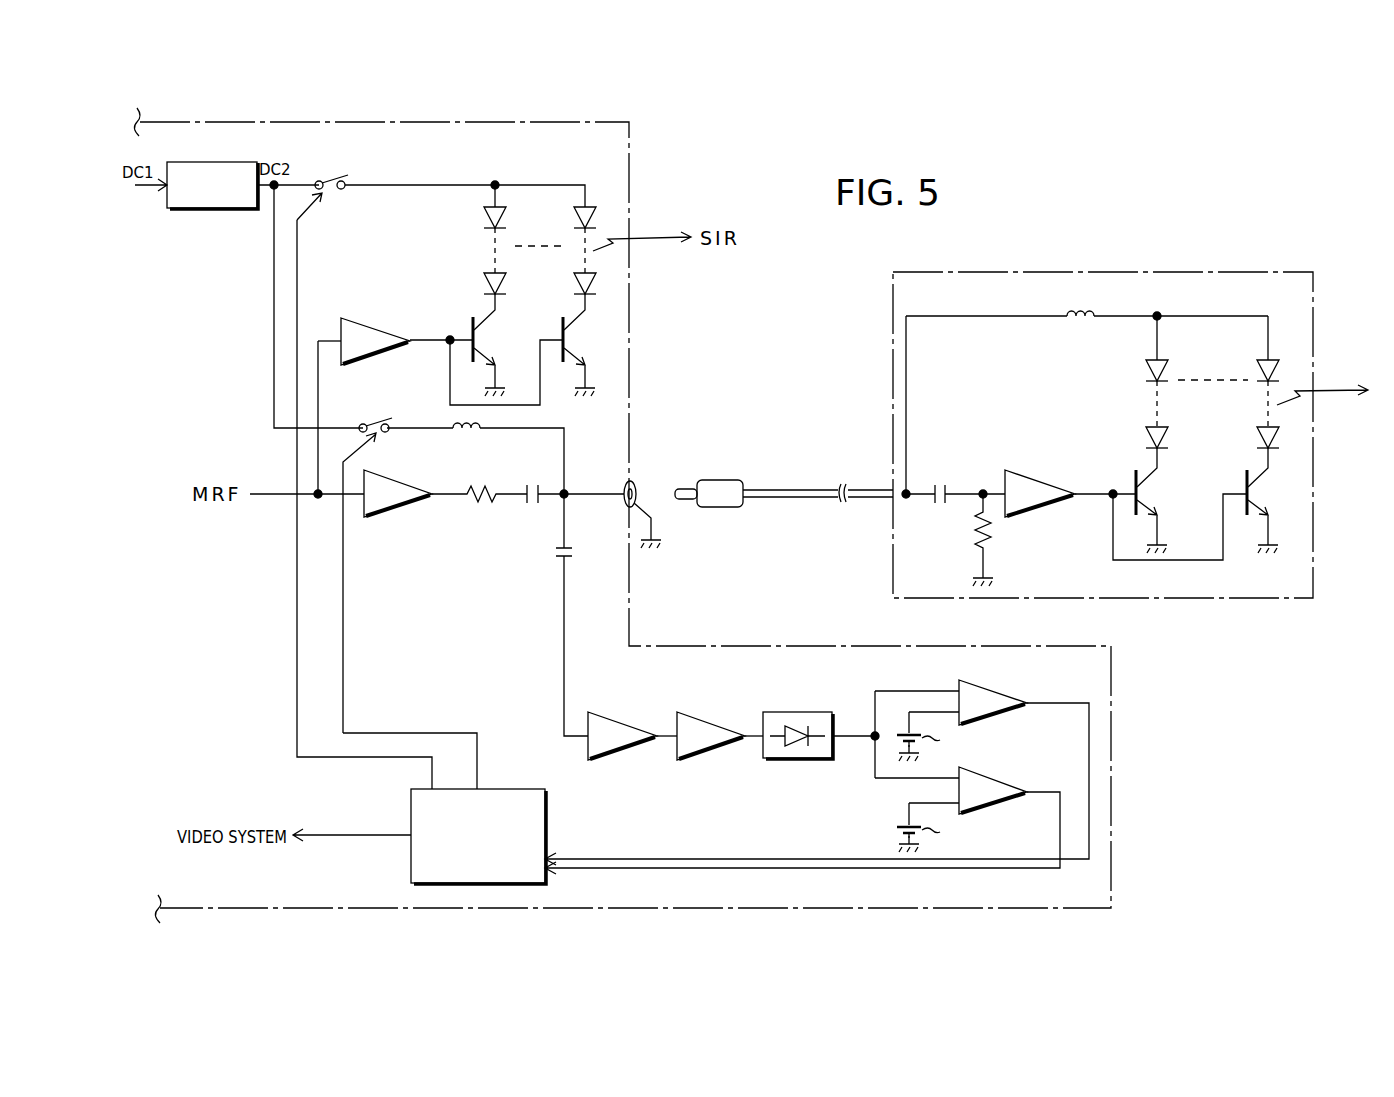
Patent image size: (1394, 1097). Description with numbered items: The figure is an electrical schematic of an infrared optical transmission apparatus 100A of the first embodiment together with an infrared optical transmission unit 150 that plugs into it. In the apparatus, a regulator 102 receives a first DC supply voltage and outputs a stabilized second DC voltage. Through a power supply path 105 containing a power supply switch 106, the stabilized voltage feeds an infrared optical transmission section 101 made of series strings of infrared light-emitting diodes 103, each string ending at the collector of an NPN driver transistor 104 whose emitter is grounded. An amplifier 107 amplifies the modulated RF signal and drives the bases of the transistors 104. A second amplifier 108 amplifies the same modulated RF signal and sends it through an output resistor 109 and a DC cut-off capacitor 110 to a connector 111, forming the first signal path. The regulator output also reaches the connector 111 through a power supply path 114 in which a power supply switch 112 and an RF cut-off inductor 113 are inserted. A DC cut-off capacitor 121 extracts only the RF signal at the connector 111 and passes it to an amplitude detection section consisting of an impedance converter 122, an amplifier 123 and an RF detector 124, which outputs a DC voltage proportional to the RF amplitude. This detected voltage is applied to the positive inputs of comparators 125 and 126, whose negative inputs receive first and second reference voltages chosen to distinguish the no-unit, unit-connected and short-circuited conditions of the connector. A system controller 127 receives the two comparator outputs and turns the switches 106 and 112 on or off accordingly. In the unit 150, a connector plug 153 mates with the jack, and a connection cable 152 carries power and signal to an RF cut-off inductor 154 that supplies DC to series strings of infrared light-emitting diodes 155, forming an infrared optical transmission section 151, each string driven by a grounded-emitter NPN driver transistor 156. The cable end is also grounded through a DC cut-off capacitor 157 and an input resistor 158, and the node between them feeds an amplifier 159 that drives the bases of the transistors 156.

The infrared optical transmission apparatus 100A is at (430, 122).
The infrared optical transmission section 101 is at (566, 262).
The regulator 102 is at (190, 162).
The infrared light-emitting diodes 103 is at (641, 274).
The NPN driver transistors 104 is at (561, 349).
The power supply path 105 is at (385, 185).
The power supply switch 106 is at (324, 180).
The amplifier 107 is at (358, 326).
The amplifier 108 is at (398, 520).
The output resistor 109 is at (480, 500).
The DC cut-off capacitor 110 is at (531, 505).
The connector (jack) 111 is at (636, 482).
The power supply switch 112 is at (366, 428).
The RF cut-off inductor 113 is at (476, 432).
The power supply path 114 is at (425, 426).
The DC cut-off capacitor 121 is at (556, 557).
The impedance converter 122 is at (627, 750).
The amplifier 123 is at (708, 752).
The RF detector 124 is at (798, 760).
The comparator 125 is at (1003, 678).
The comparator 126 is at (1006, 767).
The system controller 127 is at (548, 830).
The infrared optical transmission unit 150 is at (1004, 272).
The infrared optical transmission section 151 is at (1212, 424).
The connection cable 152 is at (781, 499).
The connector (plug) 153 is at (712, 508).
The RF cut-off inductor 154 is at (1064, 314).
The infrared light-emitting diodes 155 is at (1257, 426).
The NPN driver transistors 156 is at (1173, 503).
The DC cut-off capacitor 157 is at (933, 505).
The input resistor 158 is at (974, 538).
The amplifier 159 is at (1040, 508).